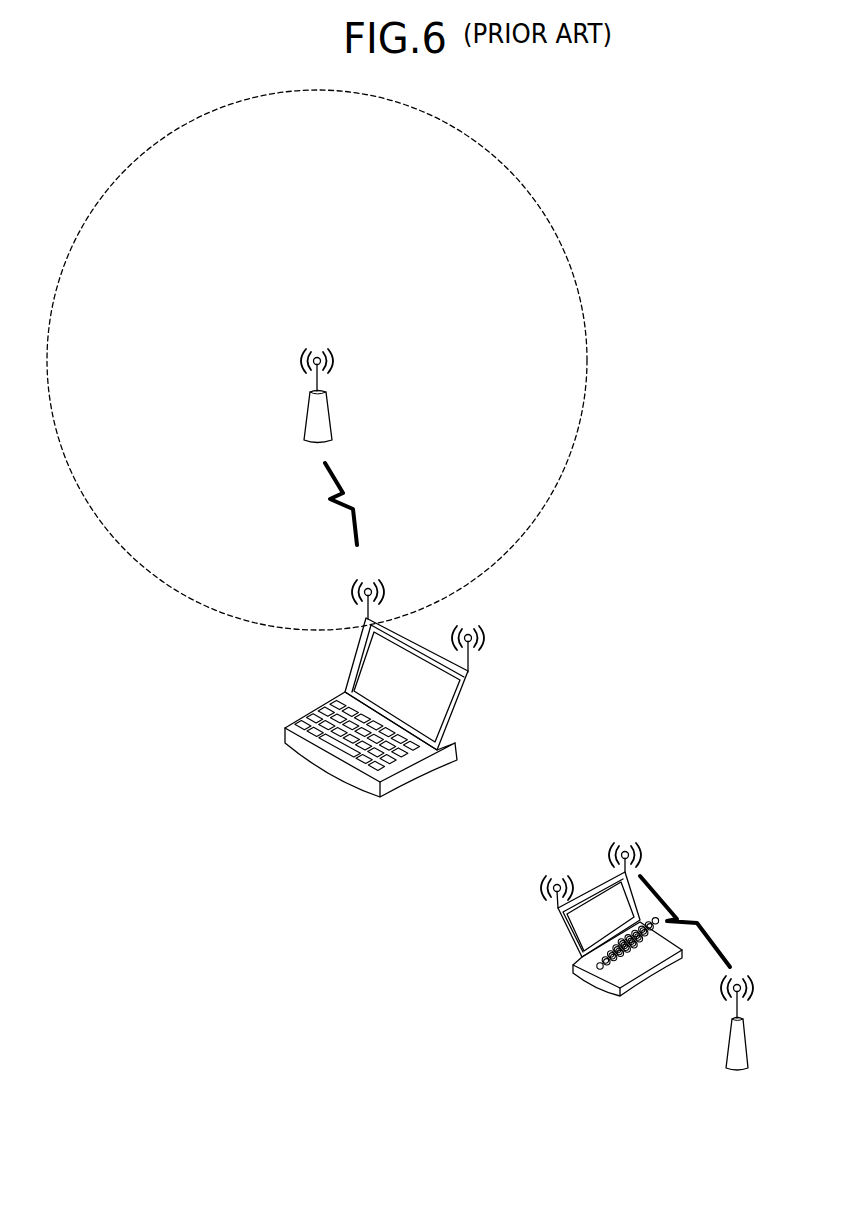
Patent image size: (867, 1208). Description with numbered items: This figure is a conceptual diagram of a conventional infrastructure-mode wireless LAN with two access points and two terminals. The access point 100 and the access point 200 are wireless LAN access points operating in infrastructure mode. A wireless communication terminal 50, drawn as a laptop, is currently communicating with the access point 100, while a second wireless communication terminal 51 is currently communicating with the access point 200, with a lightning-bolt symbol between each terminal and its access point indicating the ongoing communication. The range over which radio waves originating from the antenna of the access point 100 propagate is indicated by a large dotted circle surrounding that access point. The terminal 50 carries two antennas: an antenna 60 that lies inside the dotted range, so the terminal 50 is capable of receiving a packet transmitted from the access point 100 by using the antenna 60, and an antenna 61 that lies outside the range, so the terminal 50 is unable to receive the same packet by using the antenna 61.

The access point 100 is at (328, 415).
The access point 200 is at (728, 1040).
The wireless communication terminal 50 is at (423, 760).
The wireless communication terminal 51 is at (588, 980).
The antenna 60 is at (369, 586).
The antenna 61 is at (470, 632).